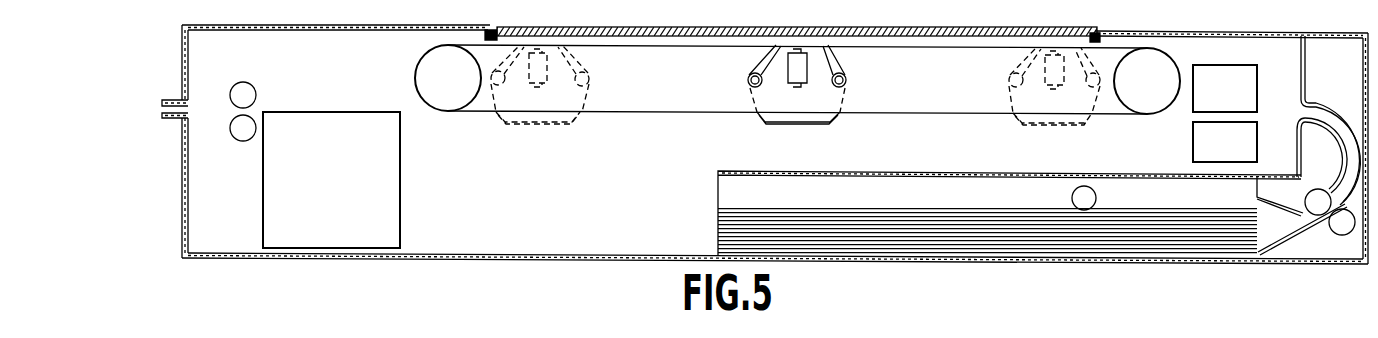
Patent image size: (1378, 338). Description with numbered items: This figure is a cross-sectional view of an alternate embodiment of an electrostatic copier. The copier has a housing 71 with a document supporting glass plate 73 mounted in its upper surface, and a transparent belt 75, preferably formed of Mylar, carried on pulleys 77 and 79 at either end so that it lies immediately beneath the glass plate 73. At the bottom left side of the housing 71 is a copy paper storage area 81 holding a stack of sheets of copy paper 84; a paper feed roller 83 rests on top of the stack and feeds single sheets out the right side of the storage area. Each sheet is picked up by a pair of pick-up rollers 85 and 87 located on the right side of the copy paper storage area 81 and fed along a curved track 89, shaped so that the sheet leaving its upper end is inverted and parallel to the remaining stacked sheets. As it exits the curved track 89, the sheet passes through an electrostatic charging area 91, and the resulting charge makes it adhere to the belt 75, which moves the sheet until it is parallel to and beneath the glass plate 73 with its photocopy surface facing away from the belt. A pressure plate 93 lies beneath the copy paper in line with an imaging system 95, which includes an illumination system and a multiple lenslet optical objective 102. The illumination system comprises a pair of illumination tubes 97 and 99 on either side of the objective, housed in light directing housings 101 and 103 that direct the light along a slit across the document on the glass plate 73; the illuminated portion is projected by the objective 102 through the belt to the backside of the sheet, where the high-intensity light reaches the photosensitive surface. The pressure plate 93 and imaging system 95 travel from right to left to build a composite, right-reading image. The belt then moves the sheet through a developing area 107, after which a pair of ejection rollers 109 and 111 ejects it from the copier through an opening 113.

The housing 71 is at (1200, 31).
The document supporting glass plate 73 is at (874, 27).
The transparent belt 75 is at (680, 112).
The pulley 77 is at (437, 85).
The pulley 79 is at (1136, 88).
The copy paper storage area 81 is at (878, 202).
The paper feed roller 83 is at (1097, 197).
The stack of sheets of copy paper 84 is at (1001, 214).
The pick-up roller 85 is at (1318, 189).
The pick-up roller 87 is at (1336, 232).
The curved track 89 is at (1336, 130).
The electrostatic charging area 91 is at (1192, 115).
The pressure plate 93 is at (800, 123).
The imaging system 95 is at (822, 96).
The illumination tube 97 is at (750, 74).
The illumination tube 99 is at (845, 74).
The light directing housing 101 is at (748, 83).
The multiple lenslet optical objective 102 is at (790, 84).
The light directing housing 103 is at (847, 83).
The developing area 107 is at (319, 190).
The ejection roller 109 is at (253, 90).
The ejection roller 111 is at (254, 131).
The opening 113 is at (160, 104).